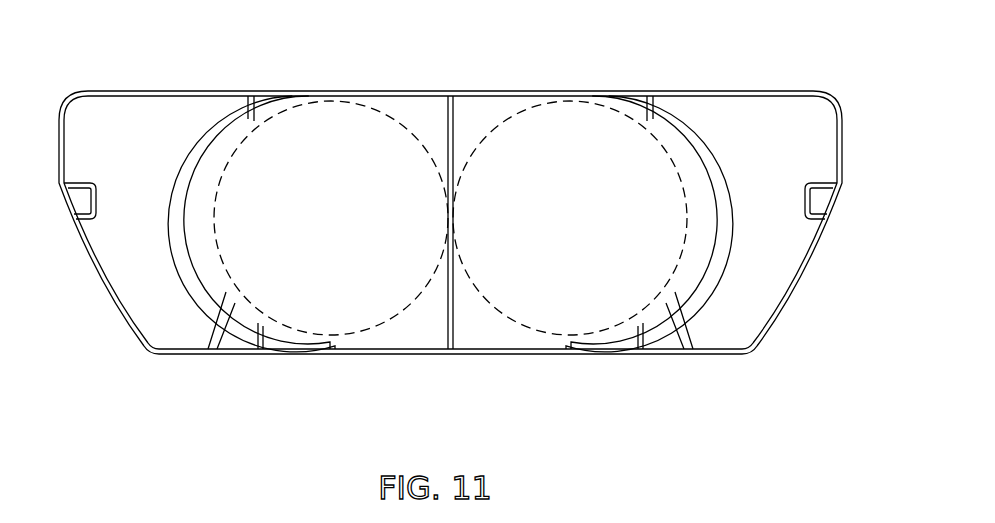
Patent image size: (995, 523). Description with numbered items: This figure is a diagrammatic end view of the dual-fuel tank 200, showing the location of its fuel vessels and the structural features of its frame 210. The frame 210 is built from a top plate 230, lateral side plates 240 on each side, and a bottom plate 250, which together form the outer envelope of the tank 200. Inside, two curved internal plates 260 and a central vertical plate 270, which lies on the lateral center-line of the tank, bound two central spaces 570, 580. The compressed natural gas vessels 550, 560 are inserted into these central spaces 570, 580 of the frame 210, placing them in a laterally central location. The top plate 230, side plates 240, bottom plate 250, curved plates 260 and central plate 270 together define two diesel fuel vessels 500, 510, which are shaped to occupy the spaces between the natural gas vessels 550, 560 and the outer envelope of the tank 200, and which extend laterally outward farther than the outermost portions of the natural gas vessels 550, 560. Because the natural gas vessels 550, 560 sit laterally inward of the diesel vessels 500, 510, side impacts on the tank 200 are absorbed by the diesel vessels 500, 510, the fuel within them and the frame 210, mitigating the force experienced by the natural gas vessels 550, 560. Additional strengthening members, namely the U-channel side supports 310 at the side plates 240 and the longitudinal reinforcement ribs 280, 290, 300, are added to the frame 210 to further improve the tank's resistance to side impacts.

The dual-fuel tank 200 is at (459, 214).
The frame 210 is at (459, 214).
The top plate 230 is at (720, 91).
The lateral side plates 240 is at (103, 290).
The bottom plate 250 is at (538, 357).
The curved internal plates 260 is at (203, 216).
The central vertical plate 270 is at (455, 355).
The longitudinal reinforcement rib 280 is at (246, 97).
The longitudinal reinforcement rib 290 is at (213, 333).
The longitudinal reinforcement rib 300 is at (255, 337).
The side supports 310 is at (78, 183).
The diesel fuel vessel 500 is at (137, 209).
The diesel fuel vessel 510 is at (727, 209).
The compressed natural gas vessel 550 is at (410, 132).
The compressed natural gas vessel 560 is at (492, 132).
The central space 570 is at (307, 230).
The central space 580 is at (557, 230).